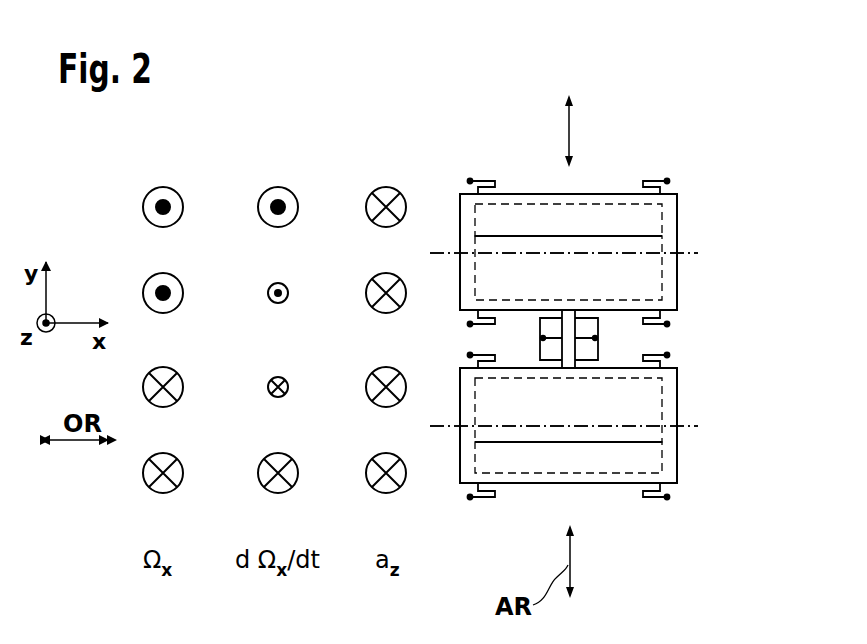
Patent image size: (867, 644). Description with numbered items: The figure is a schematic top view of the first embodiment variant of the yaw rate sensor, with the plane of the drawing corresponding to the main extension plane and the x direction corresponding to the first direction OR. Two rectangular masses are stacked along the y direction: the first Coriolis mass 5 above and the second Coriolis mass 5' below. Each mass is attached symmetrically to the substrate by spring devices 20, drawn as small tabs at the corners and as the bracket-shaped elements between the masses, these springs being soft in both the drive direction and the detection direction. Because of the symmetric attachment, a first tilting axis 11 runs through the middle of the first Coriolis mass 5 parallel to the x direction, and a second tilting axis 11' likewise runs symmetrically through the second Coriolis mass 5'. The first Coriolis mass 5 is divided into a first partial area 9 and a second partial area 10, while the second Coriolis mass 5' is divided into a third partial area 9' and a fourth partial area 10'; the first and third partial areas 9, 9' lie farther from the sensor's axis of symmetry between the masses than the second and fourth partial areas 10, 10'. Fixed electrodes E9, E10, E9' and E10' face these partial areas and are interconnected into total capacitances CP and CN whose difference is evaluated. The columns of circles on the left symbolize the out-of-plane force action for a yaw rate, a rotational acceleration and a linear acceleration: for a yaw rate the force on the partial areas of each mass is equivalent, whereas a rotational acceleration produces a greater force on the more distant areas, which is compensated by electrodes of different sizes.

The first Coriolis mass 5 is at (564, 214).
The second Coriolis mass 5' is at (564, 467).
The first partial area 9 is at (628, 224).
The second partial area 10 is at (645, 268).
The fourth partial area 10' is at (652, 410).
The third partial area 9' is at (636, 454).
The first tilting axis 11 is at (560, 211).
The second tilting axis 11' is at (560, 467).
The spring device 20 is at (470, 181).